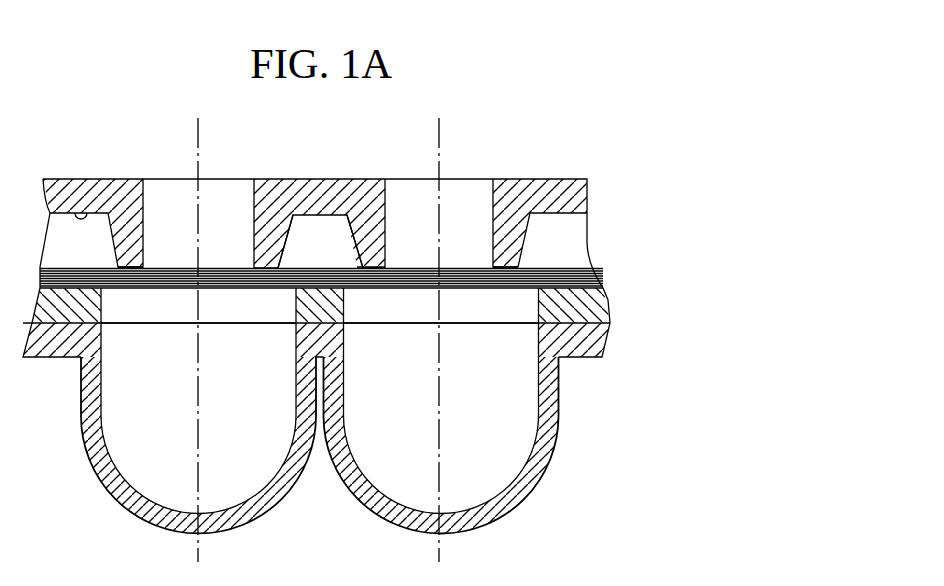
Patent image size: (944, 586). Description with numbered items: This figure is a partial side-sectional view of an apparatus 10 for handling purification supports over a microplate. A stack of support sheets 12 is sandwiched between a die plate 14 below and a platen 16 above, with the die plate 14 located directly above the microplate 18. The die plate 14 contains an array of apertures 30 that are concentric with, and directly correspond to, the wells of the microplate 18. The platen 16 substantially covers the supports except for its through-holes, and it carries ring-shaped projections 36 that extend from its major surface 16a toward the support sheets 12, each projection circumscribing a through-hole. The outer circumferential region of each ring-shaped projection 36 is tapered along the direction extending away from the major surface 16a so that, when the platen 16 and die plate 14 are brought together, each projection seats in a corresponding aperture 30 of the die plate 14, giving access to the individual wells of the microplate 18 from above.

The apparatus 10 is at (383, 286).
The platen 16 is at (321, 193).
The major surface 16a is at (103, 212).
The ring-shaped projections 36 is at (350, 236).
The support sheets 12 is at (612, 262).
The die plate 14 is at (609, 303).
The apertures 30 is at (187, 312).
The microplate 18 is at (550, 479).